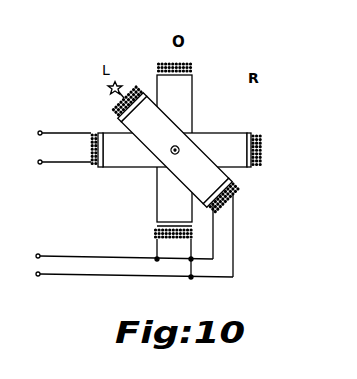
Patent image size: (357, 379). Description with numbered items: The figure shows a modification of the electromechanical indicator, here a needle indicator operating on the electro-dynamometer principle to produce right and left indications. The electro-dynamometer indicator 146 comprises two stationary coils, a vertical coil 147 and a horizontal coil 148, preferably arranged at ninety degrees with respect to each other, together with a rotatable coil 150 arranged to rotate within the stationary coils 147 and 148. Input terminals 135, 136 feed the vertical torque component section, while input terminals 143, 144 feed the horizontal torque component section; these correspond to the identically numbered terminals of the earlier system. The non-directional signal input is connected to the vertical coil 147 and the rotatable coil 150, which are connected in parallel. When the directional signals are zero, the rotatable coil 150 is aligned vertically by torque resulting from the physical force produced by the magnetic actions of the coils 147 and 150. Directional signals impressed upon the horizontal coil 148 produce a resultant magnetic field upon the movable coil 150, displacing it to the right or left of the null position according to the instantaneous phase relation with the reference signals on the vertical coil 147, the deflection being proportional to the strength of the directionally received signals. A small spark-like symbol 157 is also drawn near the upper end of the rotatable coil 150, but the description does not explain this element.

The input terminal 135 is at (39, 276).
The input terminal 136 is at (39, 254).
The input terminal 143 is at (66, 120).
The input terminal 144 is at (60, 176).
The electro-dynamometer indicator 146 is at (230, 118).
The vertical coil 147 is at (189, 92).
The horizontal coil 148 is at (129, 168).
The rotatable coil 150 is at (201, 182).
The spark gap 157 is at (118, 82).